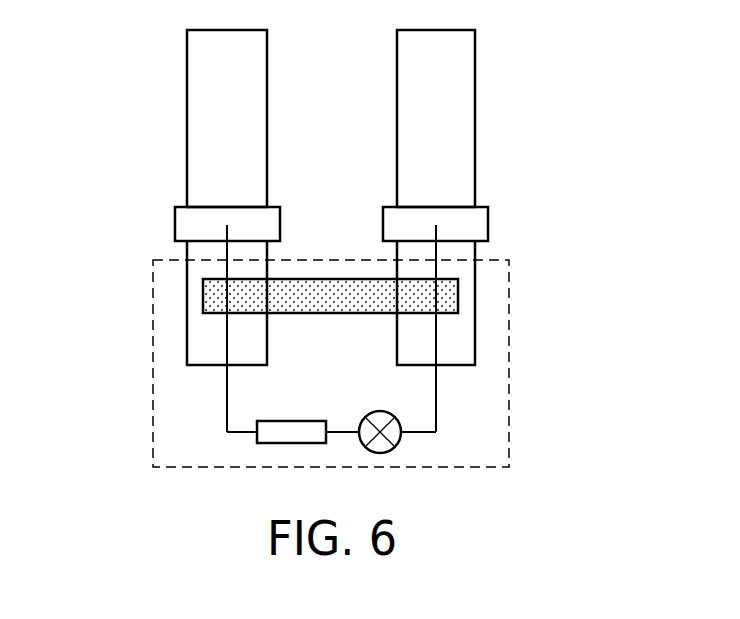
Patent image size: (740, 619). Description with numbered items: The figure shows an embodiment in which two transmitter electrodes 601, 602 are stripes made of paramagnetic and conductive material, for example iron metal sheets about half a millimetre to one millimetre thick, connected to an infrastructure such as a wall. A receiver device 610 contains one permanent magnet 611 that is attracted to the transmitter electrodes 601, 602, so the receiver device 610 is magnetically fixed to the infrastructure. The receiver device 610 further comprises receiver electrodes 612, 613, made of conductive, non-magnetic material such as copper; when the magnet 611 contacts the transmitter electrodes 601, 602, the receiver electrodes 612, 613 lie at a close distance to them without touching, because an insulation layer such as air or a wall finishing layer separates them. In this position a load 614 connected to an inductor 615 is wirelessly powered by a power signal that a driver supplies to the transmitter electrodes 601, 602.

The transmitter electrode 601 is at (475, 103).
The transmitter electrode 602 is at (187, 103).
The receiver device 610 is at (509, 360).
The permanent magnet 611 is at (458, 287).
The receiver electrode 612 is at (175, 220).
The receiver electrode 613 is at (488, 216).
The load 614 is at (380, 412).
The inductor 615 is at (302, 421).